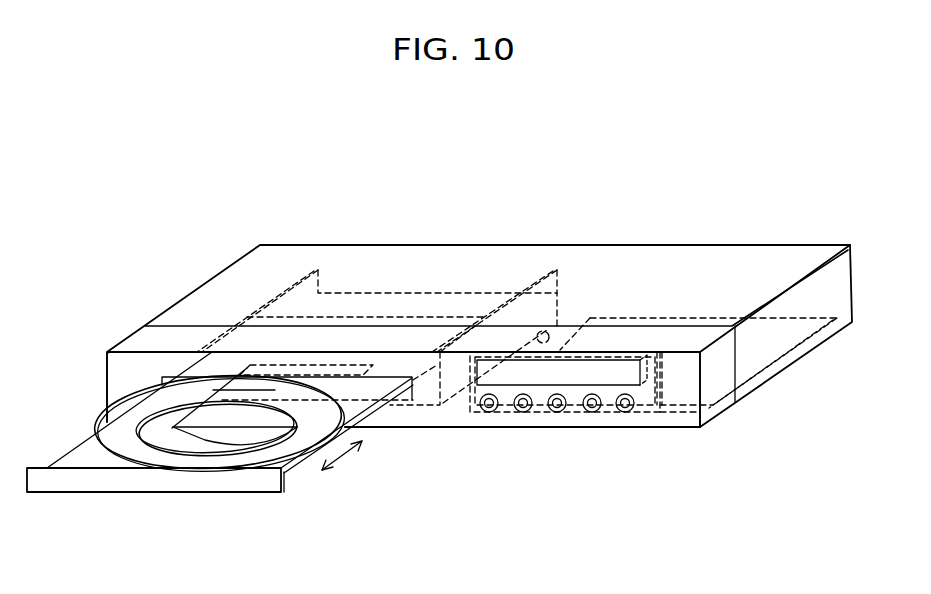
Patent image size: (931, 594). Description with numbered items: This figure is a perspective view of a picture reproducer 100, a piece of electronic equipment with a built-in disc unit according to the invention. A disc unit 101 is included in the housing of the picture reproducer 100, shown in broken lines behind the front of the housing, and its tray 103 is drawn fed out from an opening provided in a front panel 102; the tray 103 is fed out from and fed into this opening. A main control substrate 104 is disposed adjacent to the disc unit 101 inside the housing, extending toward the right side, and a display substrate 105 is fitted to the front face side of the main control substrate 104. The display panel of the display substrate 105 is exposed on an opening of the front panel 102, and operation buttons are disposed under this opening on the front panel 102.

The picture reproducer 100 is at (228, 250).
The disc unit 101 is at (427, 397).
The front panel 102 is at (506, 423).
The tray 103 is at (248, 485).
The main control substrate 104 is at (772, 350).
The display substrate 105 is at (652, 392).